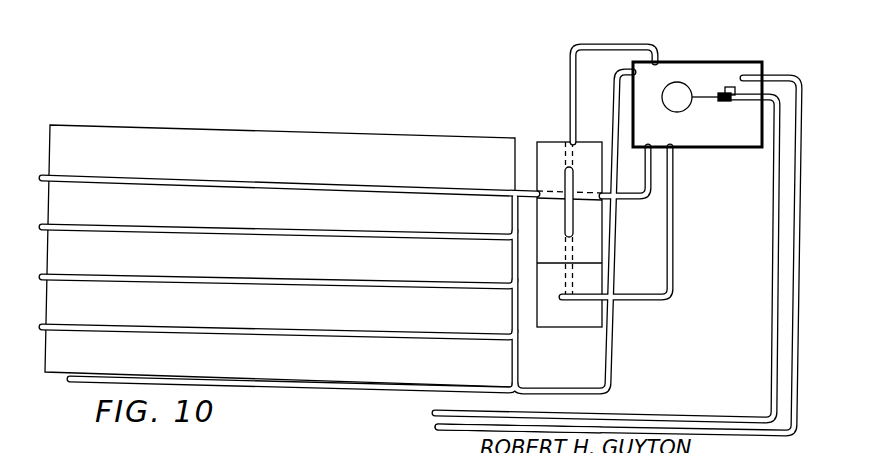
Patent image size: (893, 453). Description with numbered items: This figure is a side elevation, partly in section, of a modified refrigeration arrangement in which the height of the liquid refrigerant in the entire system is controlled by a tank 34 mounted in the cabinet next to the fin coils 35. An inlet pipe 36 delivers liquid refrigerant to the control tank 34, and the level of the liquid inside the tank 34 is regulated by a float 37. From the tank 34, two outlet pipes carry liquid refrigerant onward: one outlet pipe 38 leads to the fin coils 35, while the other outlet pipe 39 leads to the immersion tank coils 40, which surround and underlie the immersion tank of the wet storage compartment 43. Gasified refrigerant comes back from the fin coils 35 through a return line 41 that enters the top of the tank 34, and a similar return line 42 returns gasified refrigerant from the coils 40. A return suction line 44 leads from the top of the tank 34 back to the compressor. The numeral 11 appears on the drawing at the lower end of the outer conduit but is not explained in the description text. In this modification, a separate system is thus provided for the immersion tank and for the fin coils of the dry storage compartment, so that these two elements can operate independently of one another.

The conduit 11 is at (438, 425).
The tank 34 is at (728, 128).
The fin coils 35 is at (548, 160).
The inlet pipe 36 is at (775, 274).
The float 37 is at (680, 92).
The outlet pipe 38 is at (672, 238).
The outlet pipe 39 is at (636, 198).
The immersion tank coils 40 is at (215, 185).
The return line 41 is at (574, 49).
The return line 42 is at (612, 343).
The wet storage compartment 43 is at (312, 158).
The return suction line 44 is at (784, 80).